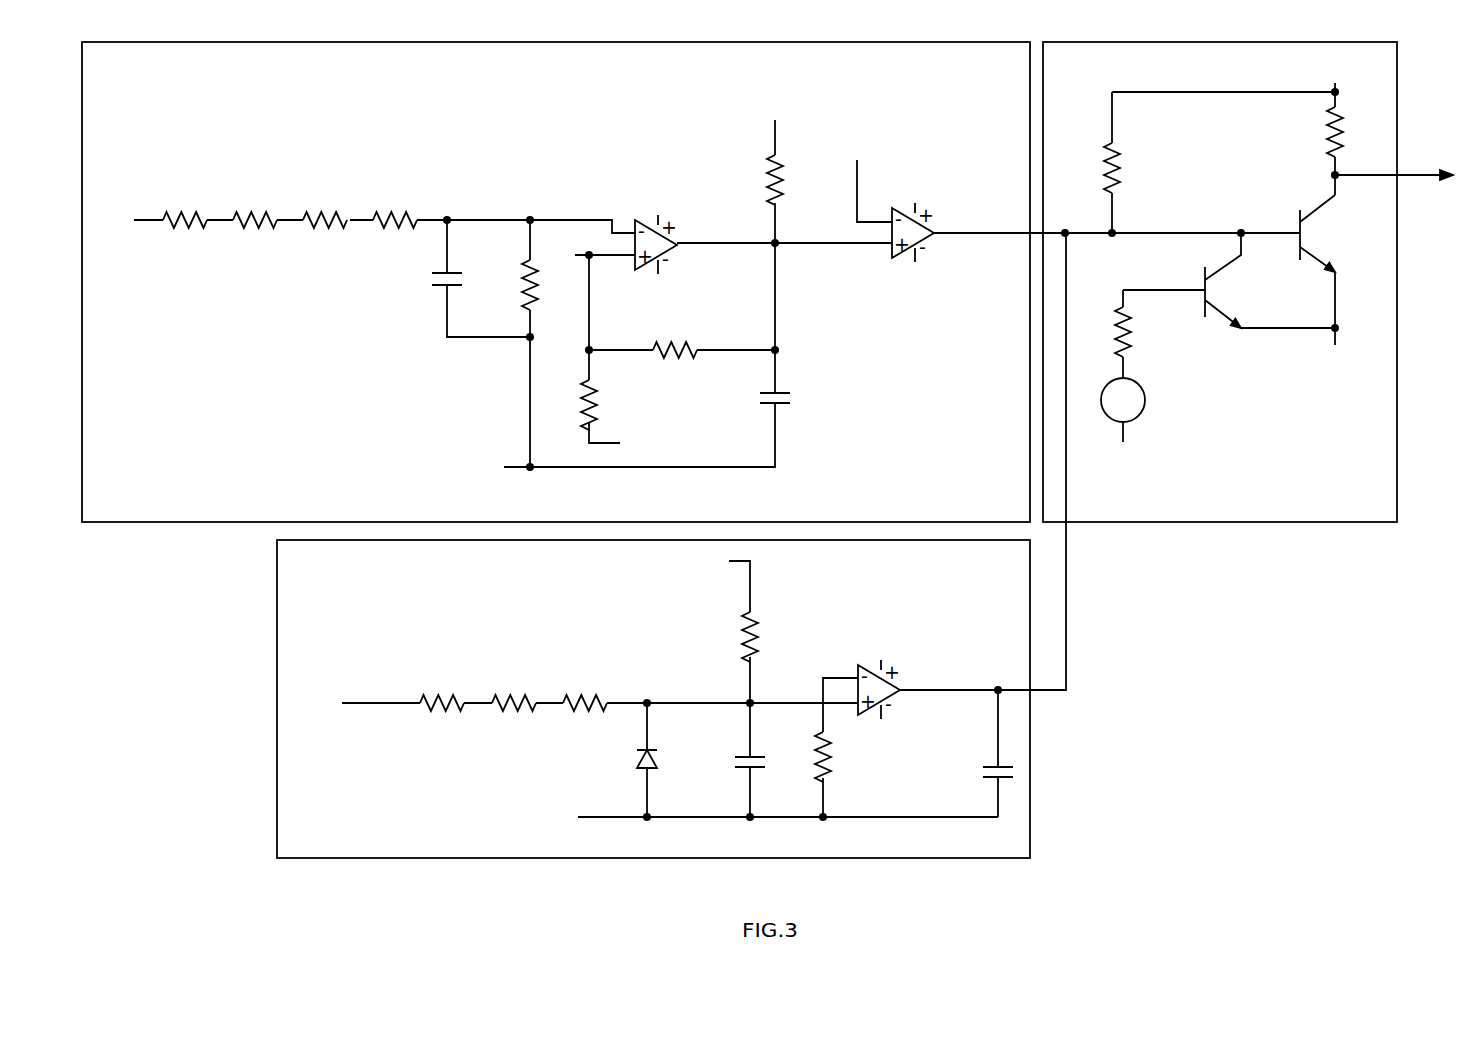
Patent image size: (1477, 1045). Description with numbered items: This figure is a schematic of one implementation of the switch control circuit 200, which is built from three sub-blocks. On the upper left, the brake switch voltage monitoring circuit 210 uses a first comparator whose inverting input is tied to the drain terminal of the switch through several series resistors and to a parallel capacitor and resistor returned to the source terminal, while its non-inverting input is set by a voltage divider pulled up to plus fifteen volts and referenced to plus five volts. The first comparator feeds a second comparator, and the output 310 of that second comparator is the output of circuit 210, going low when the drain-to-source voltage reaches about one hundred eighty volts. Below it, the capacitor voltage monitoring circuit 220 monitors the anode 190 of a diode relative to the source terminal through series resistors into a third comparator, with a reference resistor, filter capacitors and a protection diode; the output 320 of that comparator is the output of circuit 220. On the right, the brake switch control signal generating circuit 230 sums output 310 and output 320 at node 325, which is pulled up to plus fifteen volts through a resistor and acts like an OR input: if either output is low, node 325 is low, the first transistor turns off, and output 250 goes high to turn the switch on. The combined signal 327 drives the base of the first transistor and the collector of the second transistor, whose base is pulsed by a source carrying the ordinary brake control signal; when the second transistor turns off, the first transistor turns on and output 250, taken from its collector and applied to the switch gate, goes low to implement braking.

The switch control circuit 200 is at (1215, 612).
The brake switch voltage monitoring circuit 210 is at (152, 525).
The capacitor voltage monitoring circuit 220 is at (338, 858).
The brake switch control signal generating circuit 230 is at (1322, 522).
The output 250 is at (1418, 183).
The anode 190 is at (318, 714).
The output 310 is at (995, 233).
The output 320 is at (1068, 603).
The node 325 is at (1067, 228).
The combined signal 327 is at (1218, 230).